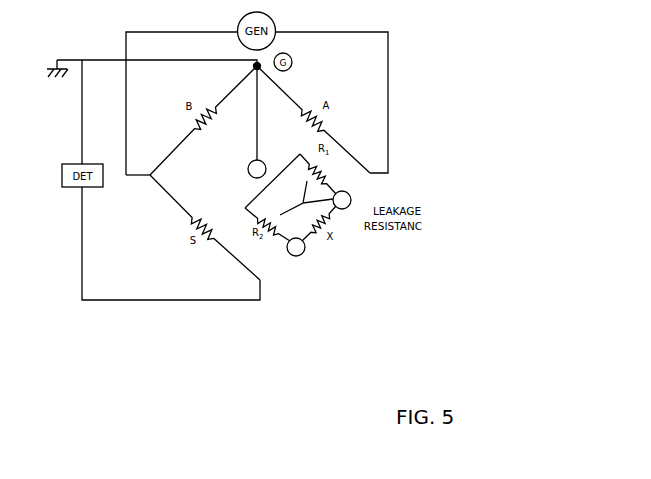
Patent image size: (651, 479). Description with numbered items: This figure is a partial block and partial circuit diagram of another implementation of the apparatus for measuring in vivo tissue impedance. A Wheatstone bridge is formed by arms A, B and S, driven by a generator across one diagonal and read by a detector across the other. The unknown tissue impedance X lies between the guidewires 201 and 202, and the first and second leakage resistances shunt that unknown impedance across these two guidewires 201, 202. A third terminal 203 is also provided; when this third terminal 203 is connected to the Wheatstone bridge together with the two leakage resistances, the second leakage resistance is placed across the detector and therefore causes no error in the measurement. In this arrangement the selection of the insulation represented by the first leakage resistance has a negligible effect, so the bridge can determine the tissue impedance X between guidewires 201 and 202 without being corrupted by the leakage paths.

The guidewire 201 is at (349, 207).
The guidewire 202 is at (300, 256).
The third terminal 203 is at (266, 172).